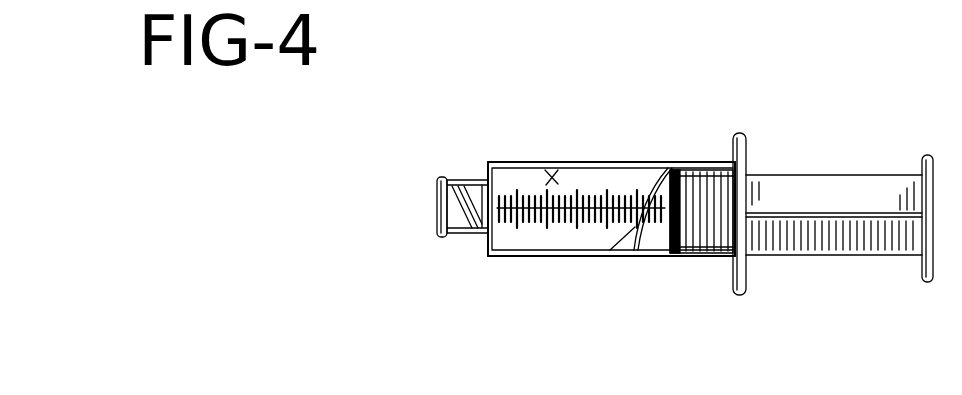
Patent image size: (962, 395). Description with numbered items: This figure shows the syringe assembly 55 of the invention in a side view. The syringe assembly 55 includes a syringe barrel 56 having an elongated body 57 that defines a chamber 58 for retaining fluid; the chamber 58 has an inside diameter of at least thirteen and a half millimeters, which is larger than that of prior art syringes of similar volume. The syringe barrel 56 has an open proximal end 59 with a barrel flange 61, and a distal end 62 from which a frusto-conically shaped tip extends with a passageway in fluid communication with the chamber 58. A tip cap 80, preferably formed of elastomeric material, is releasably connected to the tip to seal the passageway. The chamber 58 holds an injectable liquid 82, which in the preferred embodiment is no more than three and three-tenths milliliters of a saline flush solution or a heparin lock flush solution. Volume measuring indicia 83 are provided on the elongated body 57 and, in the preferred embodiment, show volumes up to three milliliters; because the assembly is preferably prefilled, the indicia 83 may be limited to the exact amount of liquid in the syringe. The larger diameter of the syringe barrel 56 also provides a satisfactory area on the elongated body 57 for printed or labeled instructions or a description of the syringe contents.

The syringe assembly 55 is at (657, 110).
The syringe barrel 56 is at (602, 162).
The elongated body 57 is at (667, 257).
The chamber 58 is at (563, 237).
The open proximal end 59 is at (720, 162).
The barrel flange 61 is at (737, 296).
The distal end 62 is at (508, 162).
The tip cap 80 is at (437, 226).
The injectable liquid 82 is at (548, 169).
The volume measuring indicia 83 is at (610, 250).